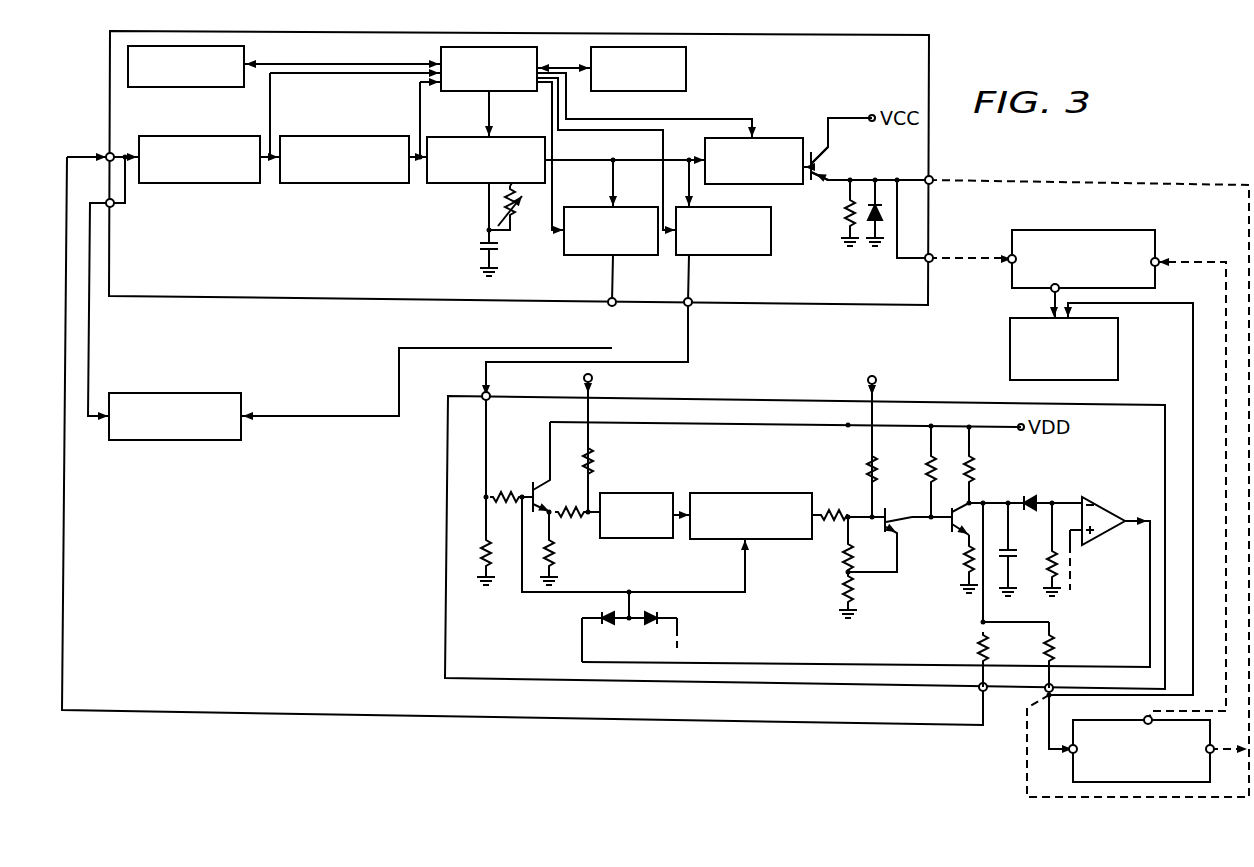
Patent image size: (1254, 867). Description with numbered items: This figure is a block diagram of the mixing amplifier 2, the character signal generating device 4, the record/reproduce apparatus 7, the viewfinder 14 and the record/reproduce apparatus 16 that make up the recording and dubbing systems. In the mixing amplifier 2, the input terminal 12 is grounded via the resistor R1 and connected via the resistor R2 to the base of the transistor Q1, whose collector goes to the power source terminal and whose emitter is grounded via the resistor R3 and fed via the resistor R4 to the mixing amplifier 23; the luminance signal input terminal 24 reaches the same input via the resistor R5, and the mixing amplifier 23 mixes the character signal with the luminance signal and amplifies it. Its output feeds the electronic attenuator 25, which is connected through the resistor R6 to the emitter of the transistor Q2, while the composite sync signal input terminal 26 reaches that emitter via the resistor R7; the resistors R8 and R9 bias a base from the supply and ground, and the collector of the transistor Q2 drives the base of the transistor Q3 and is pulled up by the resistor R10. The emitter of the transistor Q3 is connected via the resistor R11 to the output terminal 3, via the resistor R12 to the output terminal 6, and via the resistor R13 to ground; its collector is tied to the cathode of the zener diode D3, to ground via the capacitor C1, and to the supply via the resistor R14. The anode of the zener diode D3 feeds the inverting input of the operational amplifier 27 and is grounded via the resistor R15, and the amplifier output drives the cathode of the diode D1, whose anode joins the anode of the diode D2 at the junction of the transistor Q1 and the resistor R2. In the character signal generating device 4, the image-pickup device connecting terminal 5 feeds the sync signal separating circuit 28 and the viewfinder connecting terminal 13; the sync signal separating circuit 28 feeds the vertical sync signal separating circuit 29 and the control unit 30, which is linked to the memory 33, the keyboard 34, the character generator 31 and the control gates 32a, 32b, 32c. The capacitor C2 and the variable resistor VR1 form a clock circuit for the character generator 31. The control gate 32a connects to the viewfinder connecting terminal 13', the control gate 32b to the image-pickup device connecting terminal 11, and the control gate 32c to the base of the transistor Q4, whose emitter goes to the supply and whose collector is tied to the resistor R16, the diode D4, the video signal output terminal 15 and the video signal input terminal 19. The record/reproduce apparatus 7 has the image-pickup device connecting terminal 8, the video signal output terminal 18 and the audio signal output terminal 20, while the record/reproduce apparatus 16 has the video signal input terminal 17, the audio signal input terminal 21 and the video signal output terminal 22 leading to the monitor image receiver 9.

The mixing amplifier 2 is at (448, 438).
The output terminal of the mixing amplifier 3 is at (982, 690).
The character signal generating device 4 is at (929, 40).
The image-pickup device connecting terminal of the character signal generating devic 5 is at (108, 154).
The output terminal of the mixing amplifier 6 is at (1051, 686).
The record/reproduce apparatus 7 is at (1074, 768).
The image-pickup device connecting terminal of the record/reproduce apparatus 8 is at (1071, 750).
The monitor image receiver 9 is at (1118, 333).
The image-pickup device connecting terminal of the character signal generating devic 11 is at (690, 303).
The input terminal of the mixing amplifier 12 is at (484, 393).
The viewfinder connecting terminal of the character signal generating device 13 is at (130, 220).
The viewfinder connecting terminal of the character signal generating device 13' is at (598, 315).
The electronic viewfinder 14 is at (160, 393).
The video signal output terminal of the character signal generating device 15 is at (930, 260).
The record/reproduce apparatus 16 is at (1100, 230).
The video signal input terminal of the record/reproduce apparatus 17 is at (1010, 257).
The video signal output terminal of the record/reproduce apparatus 18 is at (1212, 752).
The video signal input terminal of the character signal generating device 19 is at (930, 178).
The audio signal output terminal of the record/reproduce apparatus 20 is at (1146, 719).
The audio signal input terminal of the record/reproduce apparatus 21 is at (1157, 261).
The video signal output terminal of the record/reproduce apparatus 22 is at (1053, 290).
The mixing amplifier 23 is at (645, 493).
The luminance signal input terminal 24 is at (592, 378).
The electronic attenuator 25 is at (727, 493).
The composite sync signal input terminal 26 is at (876, 380).
The operational amplifier 27 is at (1105, 509).
The sync signal separating circuit 28 is at (185, 136).
The vertical sync signal separating circuit 29 is at (323, 136).
The control unit 30 is at (441, 58).
The character generator 31 is at (478, 137).
The control gate 32a is at (640, 255).
The control gate 32b is at (725, 255).
The control gate 32c is at (765, 137).
The memory 33 is at (686, 60).
The keyboard 34 is at (162, 88).
The resistor R1 is at (483, 545).
The resistor R2 is at (500, 493).
The resistor R3 is at (556, 555).
The resistor R4 is at (576, 516).
The resistor R5 is at (596, 456).
The resistor R6 is at (830, 510).
The resistor R7 is at (866, 458).
The resistor R8 is at (842, 555).
The resistor R9 is at (842, 586).
The resistor R10 is at (926, 470).
The resistor R11 is at (980, 634).
The resistor R12 is at (1058, 640).
The resistor R13 is at (966, 552).
The resistor R14 is at (964, 470).
The resistor R15 is at (1046, 570).
The resistor R16 is at (846, 210).
The transistor Q1 is at (543, 492).
The transistor Q2 is at (888, 516).
The transistor Q3 is at (962, 520).
The transistor Q4 is at (822, 165).
The capacitor C1 is at (1013, 550).
The capacitor C2 is at (479, 243).
The diode D1 is at (603, 612).
The diode D2 is at (650, 612).
The zener diode D3 is at (1028, 496).
The diode D4 is at (880, 205).
The variable resistor VR1 is at (515, 222).